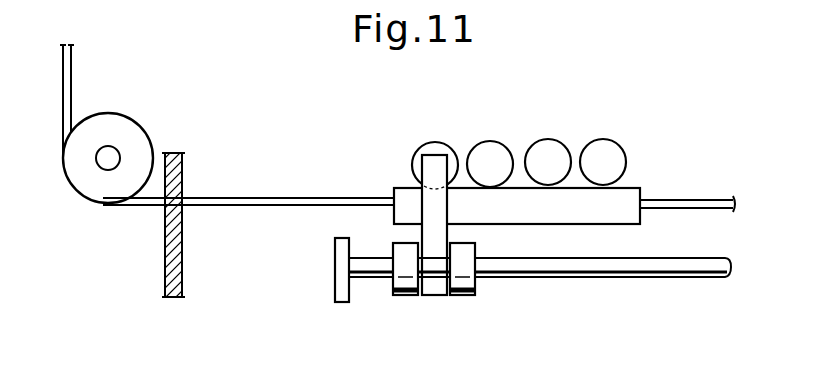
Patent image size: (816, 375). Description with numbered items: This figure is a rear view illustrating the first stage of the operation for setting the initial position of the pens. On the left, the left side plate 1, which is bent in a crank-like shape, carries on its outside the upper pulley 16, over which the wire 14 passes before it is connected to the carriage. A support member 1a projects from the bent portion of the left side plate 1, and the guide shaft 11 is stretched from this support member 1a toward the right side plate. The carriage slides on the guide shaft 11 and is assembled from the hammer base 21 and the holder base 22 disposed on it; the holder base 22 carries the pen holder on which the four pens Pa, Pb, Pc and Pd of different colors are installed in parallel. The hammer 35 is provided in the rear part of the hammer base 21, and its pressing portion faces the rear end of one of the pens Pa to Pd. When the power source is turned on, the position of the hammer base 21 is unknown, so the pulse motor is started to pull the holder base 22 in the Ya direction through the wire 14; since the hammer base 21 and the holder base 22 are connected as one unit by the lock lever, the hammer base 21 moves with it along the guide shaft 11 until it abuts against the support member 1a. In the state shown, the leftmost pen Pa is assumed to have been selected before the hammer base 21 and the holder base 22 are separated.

The left side plate 1 is at (163, 275).
The support member 1a is at (333, 268).
The guide shaft 11 is at (565, 272).
The wire 14 is at (677, 200).
The upper pulley 16 is at (102, 190).
The hammer base 21 is at (465, 296).
The holder base 22 is at (627, 215).
The hammer 35 is at (437, 287).
The pen Pa is at (435, 151).
The pen Pb is at (487, 155).
The pen Pc is at (547, 156).
The pen Pd is at (602, 157).